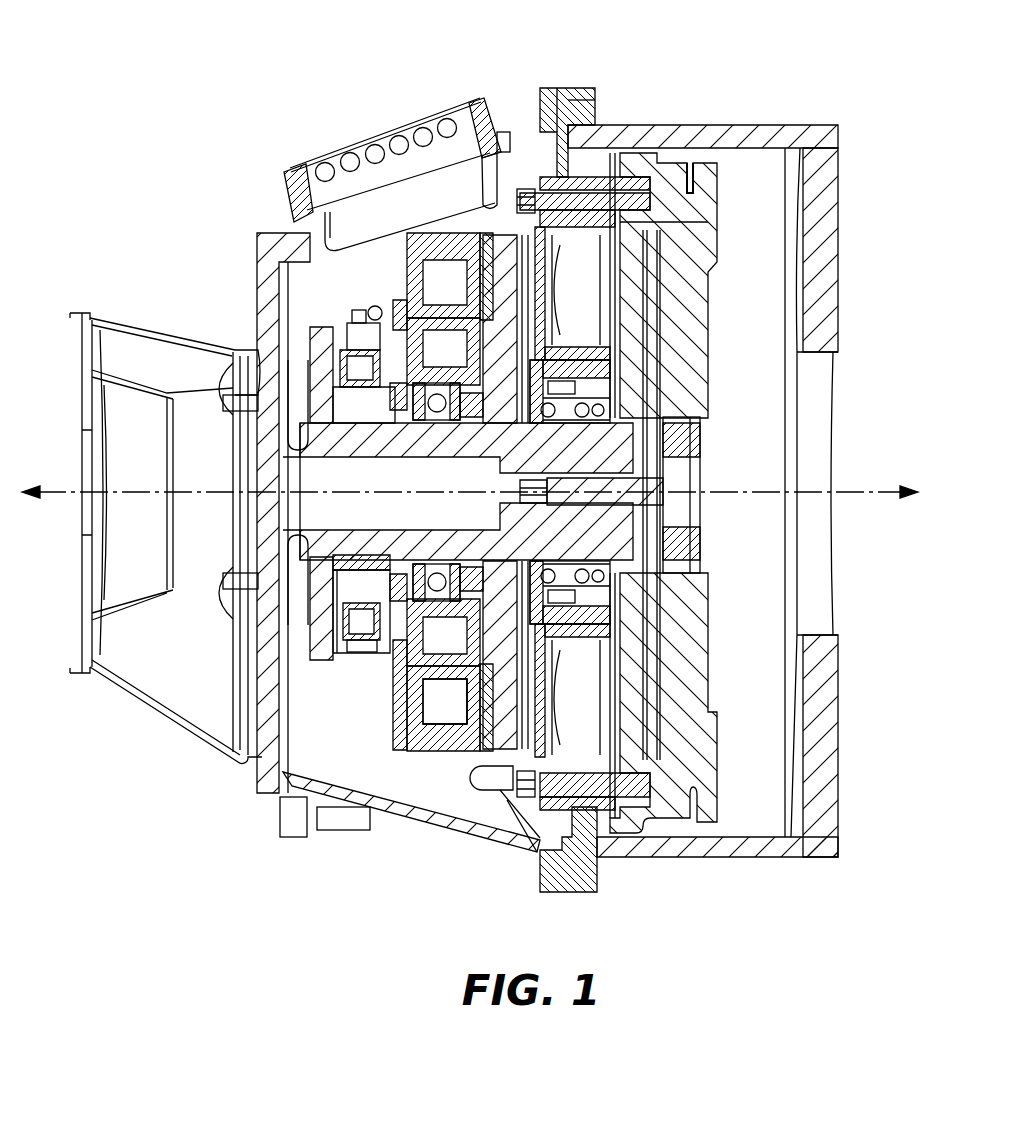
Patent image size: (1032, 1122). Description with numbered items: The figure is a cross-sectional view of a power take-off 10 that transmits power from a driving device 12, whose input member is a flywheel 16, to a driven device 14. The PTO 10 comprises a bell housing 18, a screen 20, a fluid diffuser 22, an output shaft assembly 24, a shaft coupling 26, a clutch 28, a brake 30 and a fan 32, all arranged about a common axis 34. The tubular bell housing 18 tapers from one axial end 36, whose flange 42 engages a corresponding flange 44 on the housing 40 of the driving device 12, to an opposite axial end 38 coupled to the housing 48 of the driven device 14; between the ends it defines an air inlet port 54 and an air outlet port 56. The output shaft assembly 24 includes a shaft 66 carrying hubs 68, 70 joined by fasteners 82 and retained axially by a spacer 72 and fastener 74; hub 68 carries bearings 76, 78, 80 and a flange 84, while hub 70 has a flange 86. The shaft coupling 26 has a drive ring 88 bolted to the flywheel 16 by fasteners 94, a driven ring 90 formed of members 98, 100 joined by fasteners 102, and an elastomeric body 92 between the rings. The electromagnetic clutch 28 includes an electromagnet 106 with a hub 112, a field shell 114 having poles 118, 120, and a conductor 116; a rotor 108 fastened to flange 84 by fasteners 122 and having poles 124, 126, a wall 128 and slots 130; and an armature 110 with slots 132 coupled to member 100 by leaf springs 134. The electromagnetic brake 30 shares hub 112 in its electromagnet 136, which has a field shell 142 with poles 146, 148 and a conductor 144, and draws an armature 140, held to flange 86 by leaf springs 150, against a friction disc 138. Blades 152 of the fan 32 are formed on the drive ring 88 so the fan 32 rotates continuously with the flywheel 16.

The power take-off 10 is at (126, 146).
The driving device 12 is at (875, 163).
The driven device 14 is at (60, 432).
The flywheel 16 is at (705, 160).
The bell housing 18 is at (495, 845).
The screen 20 is at (277, 810).
The fluid diffuser 22 is at (486, 108).
The output shaft assembly 24 is at (512, 512).
The shaft coupling 26 is at (590, 305).
The clutch 28 is at (417, 210).
The brake 30 is at (303, 274).
The fan 32 is at (501, 792).
The axis 34 is at (870, 490).
The axial end 36 is at (571, 66).
The axial end 38 is at (255, 203).
The housing 40 is at (790, 849).
The flange 42 is at (550, 103).
The flange 44 is at (601, 103).
The housing 48 is at (110, 683).
The air inlet port 54 is at (348, 815).
The air outlet port 56 is at (374, 208).
The shaft 66 is at (268, 521).
The hub 68 is at (600, 443).
The hub 70 is at (320, 580).
The spacer 72 is at (663, 461).
The fastener 74 is at (647, 503).
The bearing 76 is at (578, 375).
The bearing 78 is at (580, 392).
The bearing 80 is at (443, 421).
The fasteners 82 is at (354, 432).
The flange 84 is at (467, 418).
The flange 86 is at (320, 620).
The drive ring 88 is at (628, 220).
The driven ring 90 is at (610, 345).
The elastomeric body 92 is at (593, 292).
The fasteners 94 is at (625, 195).
The member 98 is at (604, 652).
The member 100 is at (600, 628).
The fasteners 102 is at (618, 612).
The electromagnet 106 is at (467, 780).
The rotor 108 is at (500, 746).
The armature 110 is at (512, 672).
The hub 112 is at (397, 687).
The field shell 114 is at (430, 745).
The conductor 116 is at (445, 740).
The inner pole 118 is at (405, 678).
The outer pole 120 is at (457, 742).
The fasteners 122 is at (466, 448).
The inner pole 124 is at (438, 325).
The outer pole 126 is at (426, 210).
The wall 128 is at (502, 710).
The slots 130 is at (450, 232).
The slots 132 is at (540, 282).
The leaf springs 134 is at (603, 688).
The electromagnet 136 is at (280, 491).
The friction disc 138 is at (318, 382).
The armature 140 is at (322, 368).
The field shell 142 is at (425, 575).
The conductor 144 is at (362, 605).
The inner pole 146 is at (325, 600).
The outer pole 148 is at (390, 600).
The leaf springs 150 is at (322, 400).
The blades 152 is at (478, 793).